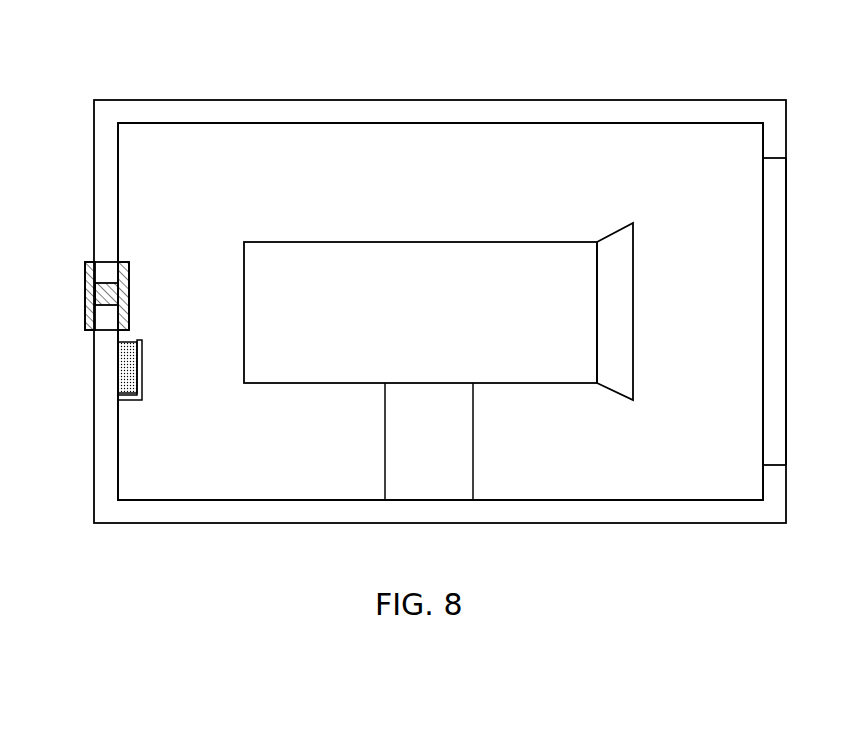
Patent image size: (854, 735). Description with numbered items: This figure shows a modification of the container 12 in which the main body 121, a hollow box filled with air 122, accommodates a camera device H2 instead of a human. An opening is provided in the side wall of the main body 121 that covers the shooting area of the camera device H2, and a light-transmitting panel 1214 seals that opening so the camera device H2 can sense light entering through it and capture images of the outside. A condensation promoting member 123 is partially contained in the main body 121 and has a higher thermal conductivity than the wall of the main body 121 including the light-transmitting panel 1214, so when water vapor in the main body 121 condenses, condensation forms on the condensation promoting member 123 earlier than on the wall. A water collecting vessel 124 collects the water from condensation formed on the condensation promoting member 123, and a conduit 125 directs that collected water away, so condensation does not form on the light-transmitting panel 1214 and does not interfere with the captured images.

The container 12 is at (652, 59).
The main body 121 is at (440, 115).
The air 122 is at (262, 187).
The light-transmitting panel 1214 is at (768, 315).
The camera device H2 is at (482, 242).
The condensation promoting member 123 is at (118, 292).
The water collecting vessel 124 is at (142, 347).
The conduit 125 is at (128, 378).